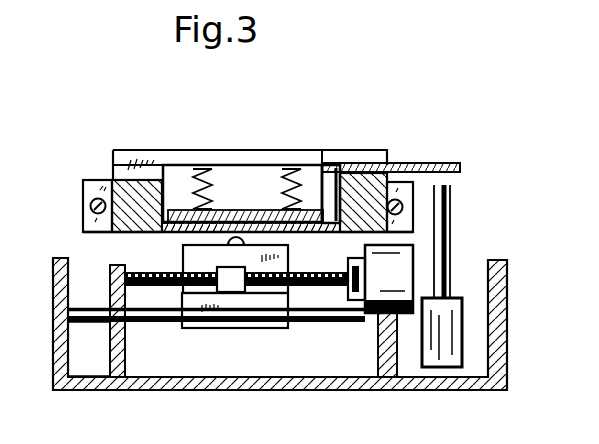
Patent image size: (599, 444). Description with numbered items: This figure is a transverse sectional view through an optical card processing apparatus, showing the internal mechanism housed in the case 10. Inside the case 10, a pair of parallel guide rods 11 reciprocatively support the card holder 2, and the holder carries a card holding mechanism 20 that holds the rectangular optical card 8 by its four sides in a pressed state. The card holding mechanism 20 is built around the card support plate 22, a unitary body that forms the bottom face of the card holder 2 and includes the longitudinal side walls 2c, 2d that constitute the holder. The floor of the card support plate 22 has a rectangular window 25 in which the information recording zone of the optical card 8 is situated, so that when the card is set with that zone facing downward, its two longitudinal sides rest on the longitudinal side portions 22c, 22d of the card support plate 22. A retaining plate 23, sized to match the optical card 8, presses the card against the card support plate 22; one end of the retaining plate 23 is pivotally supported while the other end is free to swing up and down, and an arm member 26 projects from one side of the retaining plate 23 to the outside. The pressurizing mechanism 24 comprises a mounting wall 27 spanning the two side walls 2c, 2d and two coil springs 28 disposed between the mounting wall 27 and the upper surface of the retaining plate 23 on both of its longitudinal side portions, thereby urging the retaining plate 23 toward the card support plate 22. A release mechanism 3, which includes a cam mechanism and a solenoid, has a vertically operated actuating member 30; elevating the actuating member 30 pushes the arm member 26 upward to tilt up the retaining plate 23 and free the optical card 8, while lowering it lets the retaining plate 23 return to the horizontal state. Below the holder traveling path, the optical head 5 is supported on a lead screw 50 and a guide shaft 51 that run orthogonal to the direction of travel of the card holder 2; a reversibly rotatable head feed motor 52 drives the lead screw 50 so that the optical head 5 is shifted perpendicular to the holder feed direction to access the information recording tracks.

The card holder 2 is at (120, 122).
The longitudinal side wall 2c is at (362, 187).
The longitudinal side wall 2d is at (115, 178).
The release mechanism 3 is at (470, 336).
The optical head 5 is at (222, 318).
The optical card 8 is at (257, 250).
The case 10 is at (507, 282).
The guide rods 11 is at (90, 207).
The card holding mechanism 20 is at (352, 146).
The card support plate 22 is at (213, 433).
The longitudinal side portion 22c is at (297, 232).
The longitudinal side portion 22d is at (177, 233).
The retaining plate 23 is at (177, 232).
The pressurizing mechanism 24 is at (266, 142).
The rectangular window 25 is at (231, 240).
The arm member 26 is at (460, 163).
The mounting wall 27 is at (242, 163).
The coil springs 28 is at (183, 167).
The actuating member 30 is at (450, 191).
The lead screw 50 is at (150, 275).
The guide shaft 51 is at (83, 322).
The head feed motor 52 is at (412, 257).